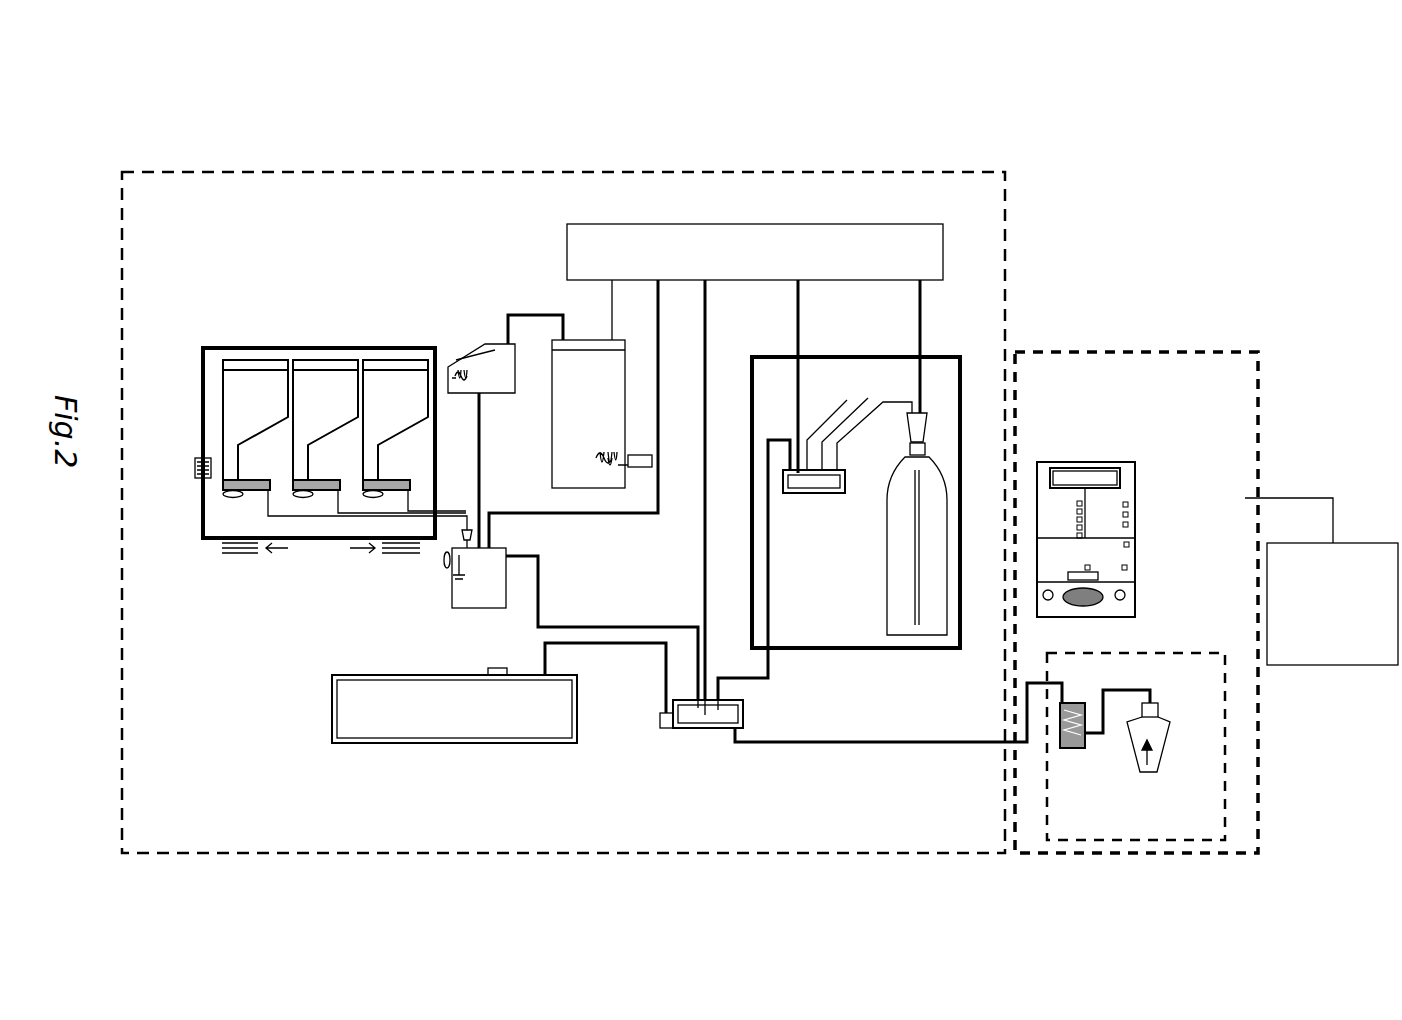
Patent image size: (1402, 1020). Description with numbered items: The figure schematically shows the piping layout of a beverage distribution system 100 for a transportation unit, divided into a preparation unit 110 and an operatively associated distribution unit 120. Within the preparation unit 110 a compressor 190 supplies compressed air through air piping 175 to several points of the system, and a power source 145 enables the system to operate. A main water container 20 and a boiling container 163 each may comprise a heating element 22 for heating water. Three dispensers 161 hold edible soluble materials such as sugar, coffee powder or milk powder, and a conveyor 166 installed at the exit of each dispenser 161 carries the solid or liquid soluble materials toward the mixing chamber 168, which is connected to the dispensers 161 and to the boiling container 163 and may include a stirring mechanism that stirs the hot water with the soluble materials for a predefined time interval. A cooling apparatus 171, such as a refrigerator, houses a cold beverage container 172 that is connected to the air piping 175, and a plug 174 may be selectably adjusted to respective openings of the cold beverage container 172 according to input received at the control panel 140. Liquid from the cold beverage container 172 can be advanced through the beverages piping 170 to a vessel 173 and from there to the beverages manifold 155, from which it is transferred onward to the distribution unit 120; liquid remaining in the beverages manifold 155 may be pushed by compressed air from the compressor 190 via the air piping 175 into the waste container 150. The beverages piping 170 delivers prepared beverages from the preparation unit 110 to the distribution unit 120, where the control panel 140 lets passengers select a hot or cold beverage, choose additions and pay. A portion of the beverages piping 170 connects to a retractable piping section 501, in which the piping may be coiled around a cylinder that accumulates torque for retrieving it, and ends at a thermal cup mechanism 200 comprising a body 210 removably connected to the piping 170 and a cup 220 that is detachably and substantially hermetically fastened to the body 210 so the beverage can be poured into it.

The beverage distribution system 100 is at (308, 88).
The preparation unit 110 is at (1012, 305).
The distribution unit 120 is at (1093, 350).
The control panel 140 is at (1177, 543).
The power source 145 is at (1368, 540).
The waste container 150 is at (347, 697).
The beverages manifold 155 is at (629, 703).
The dispenser 161 is at (421, 345).
The boiling container 163 is at (494, 349).
The conveyor 166 is at (266, 494).
The mixing chamber 168 is at (491, 575).
The beverages piping 170 is at (534, 304).
The cooling apparatus 171 is at (751, 397).
The cold beverage container 172 is at (890, 567).
The vessel 173 is at (814, 482).
The plug 174 is at (938, 410).
The air piping 175 is at (796, 293).
The compressor 190 is at (782, 220).
The main water container 20 is at (579, 338).
The heating element 22 is at (601, 461).
The thermal cup mechanism 200 is at (1207, 847).
The body 210 is at (1149, 697).
The cup 220 is at (1147, 743).
The retractable piping section 501 is at (1077, 752).